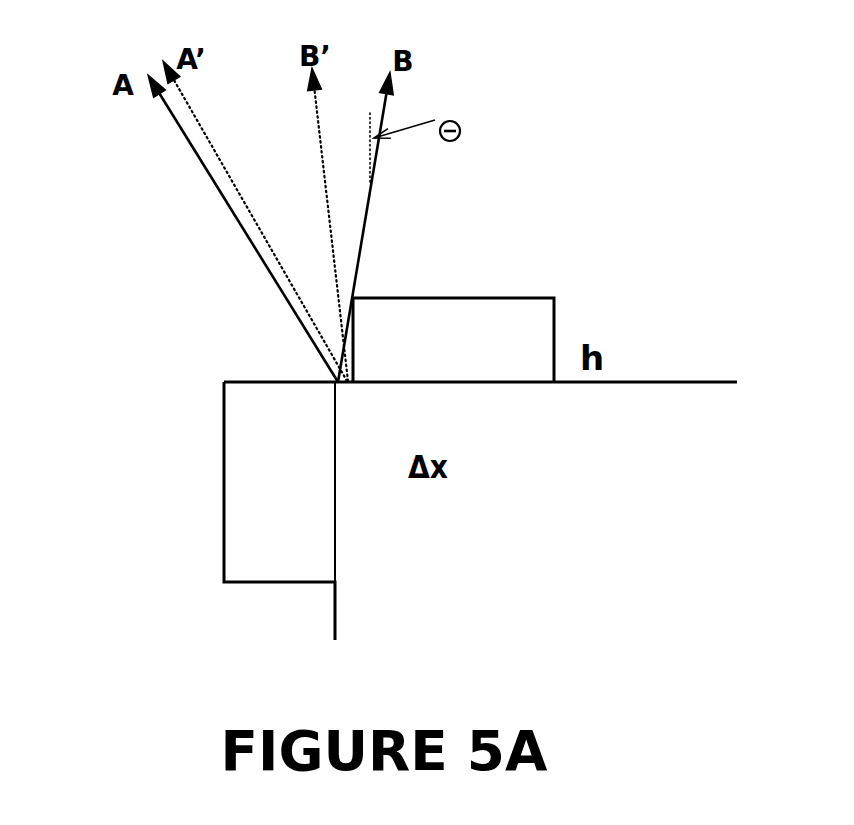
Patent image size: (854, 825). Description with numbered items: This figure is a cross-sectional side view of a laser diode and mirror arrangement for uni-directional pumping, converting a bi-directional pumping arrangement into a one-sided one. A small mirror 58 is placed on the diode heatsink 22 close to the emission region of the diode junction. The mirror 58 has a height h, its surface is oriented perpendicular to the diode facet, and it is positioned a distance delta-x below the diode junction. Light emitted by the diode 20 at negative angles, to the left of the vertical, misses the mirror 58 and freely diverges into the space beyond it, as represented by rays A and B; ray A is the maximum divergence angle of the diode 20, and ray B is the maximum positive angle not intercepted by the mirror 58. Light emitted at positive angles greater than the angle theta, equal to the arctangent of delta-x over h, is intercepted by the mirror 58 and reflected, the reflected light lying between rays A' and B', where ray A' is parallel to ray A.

The diode 20 is at (240, 478).
The diode heatsink 22 is at (625, 407).
The mirror 58 is at (357, 340).